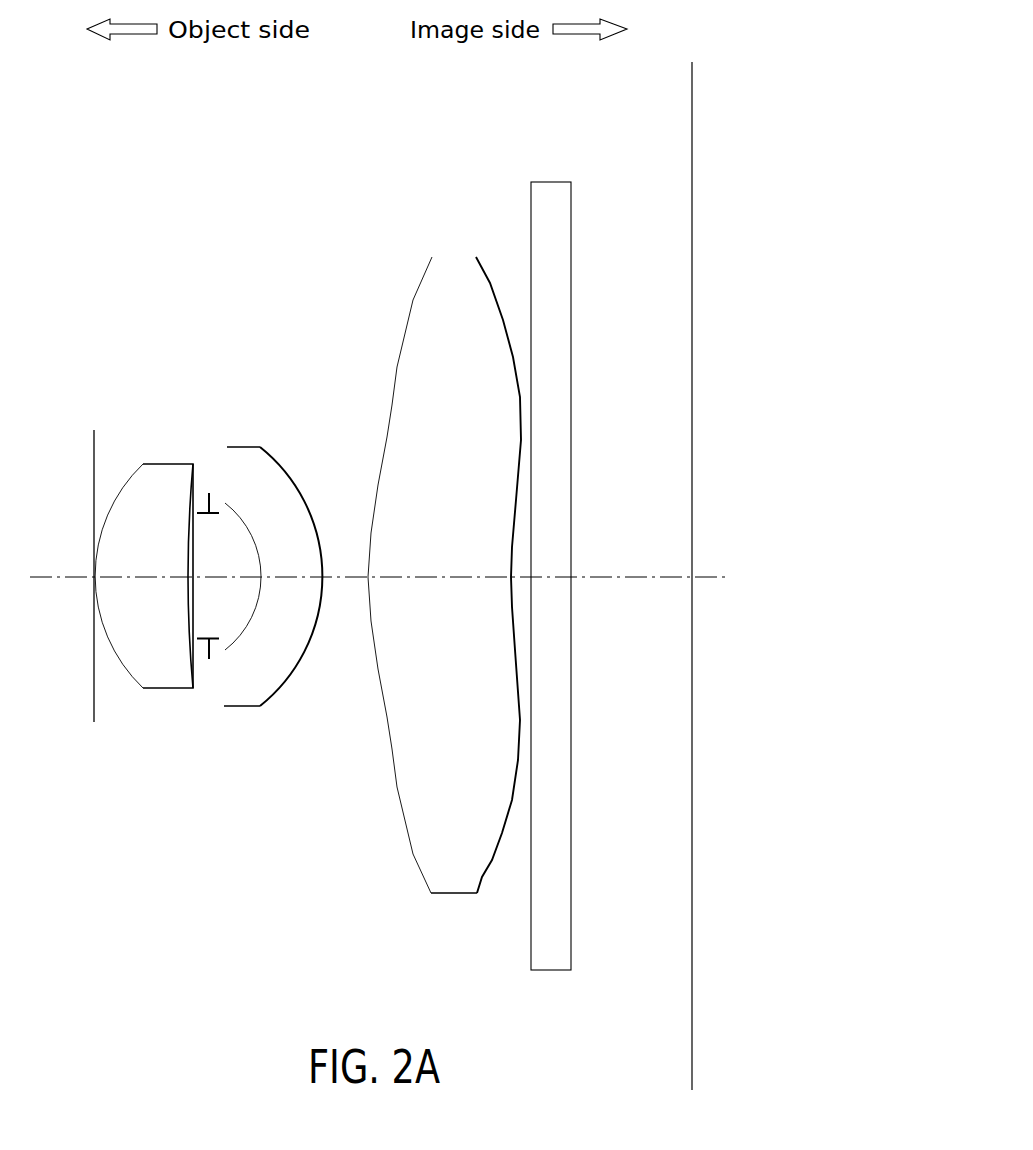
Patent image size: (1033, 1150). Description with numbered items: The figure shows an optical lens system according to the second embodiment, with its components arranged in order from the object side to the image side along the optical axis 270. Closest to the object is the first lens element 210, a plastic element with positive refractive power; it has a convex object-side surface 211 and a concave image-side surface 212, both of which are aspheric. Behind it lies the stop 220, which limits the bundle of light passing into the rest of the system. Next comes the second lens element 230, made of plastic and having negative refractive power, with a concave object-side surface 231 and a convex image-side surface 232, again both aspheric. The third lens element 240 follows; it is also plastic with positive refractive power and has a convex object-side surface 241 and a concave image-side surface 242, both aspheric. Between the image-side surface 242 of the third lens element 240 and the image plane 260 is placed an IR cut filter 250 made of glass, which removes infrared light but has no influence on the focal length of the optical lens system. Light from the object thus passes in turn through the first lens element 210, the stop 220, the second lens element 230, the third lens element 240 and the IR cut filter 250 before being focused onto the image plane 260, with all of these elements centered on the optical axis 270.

The first lens element 210 is at (168, 455).
The object-side surface of the first lens element 211 is at (94, 608).
The image-side surface of the first lens element 212 is at (190, 612).
The stop 220 is at (208, 498).
The second lens element 230 is at (244, 434).
The object-side surface of the second lens element 231 is at (260, 593).
The image-side surface of the second lens element 232 is at (319, 627).
The third lens element 240 is at (457, 245).
The object-side surface of the third lens element 241 is at (373, 645).
The image-side surface of the third lens element 242 is at (511, 598).
The IR cut filter 250 is at (554, 168).
The image plane 260 is at (692, 183).
The optical axis 270 is at (663, 577).